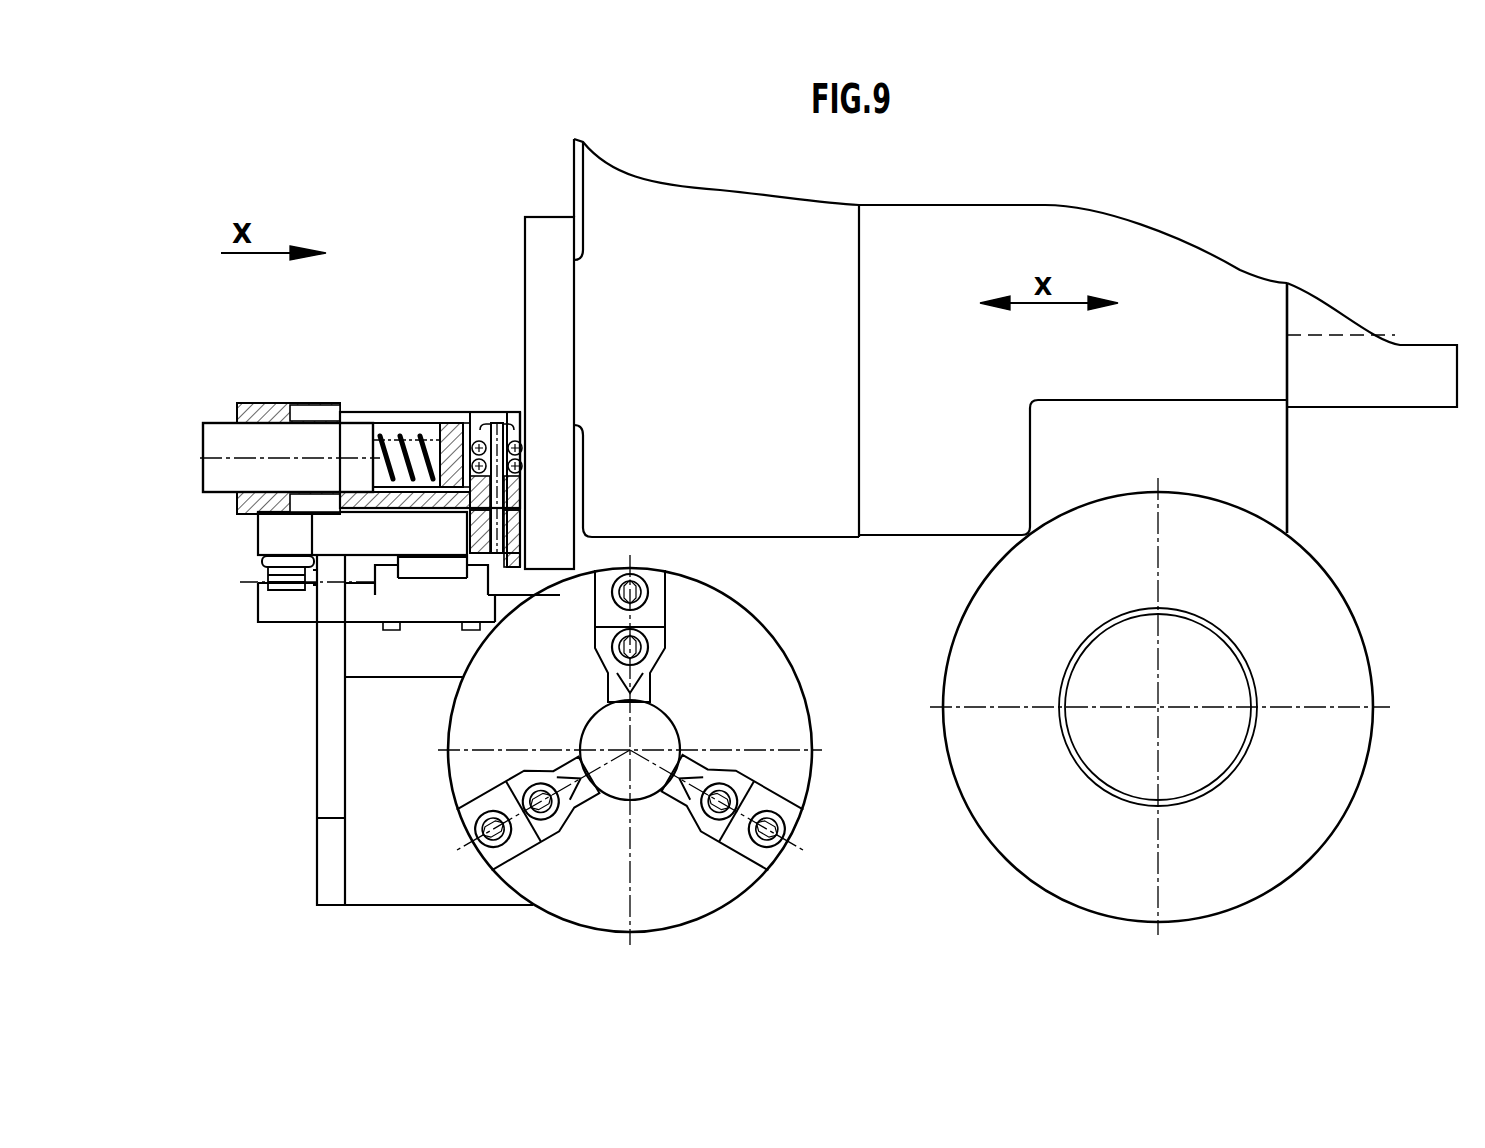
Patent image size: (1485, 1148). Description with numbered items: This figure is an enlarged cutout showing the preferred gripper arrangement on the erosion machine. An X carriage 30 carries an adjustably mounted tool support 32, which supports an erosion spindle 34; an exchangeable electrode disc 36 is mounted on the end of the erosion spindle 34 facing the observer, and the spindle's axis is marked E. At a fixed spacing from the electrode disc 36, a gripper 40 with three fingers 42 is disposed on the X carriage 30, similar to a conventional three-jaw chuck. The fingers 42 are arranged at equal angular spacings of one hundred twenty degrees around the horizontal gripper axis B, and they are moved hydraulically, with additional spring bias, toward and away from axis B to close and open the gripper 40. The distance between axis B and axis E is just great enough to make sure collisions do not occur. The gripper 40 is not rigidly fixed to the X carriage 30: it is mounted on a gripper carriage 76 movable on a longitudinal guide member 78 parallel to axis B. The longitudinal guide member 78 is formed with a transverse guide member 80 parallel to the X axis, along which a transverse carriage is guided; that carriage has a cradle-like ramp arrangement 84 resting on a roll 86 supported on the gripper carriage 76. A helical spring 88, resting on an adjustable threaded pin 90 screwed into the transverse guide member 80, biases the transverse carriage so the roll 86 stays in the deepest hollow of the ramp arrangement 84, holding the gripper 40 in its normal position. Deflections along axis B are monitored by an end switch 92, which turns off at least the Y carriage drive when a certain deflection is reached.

The X carriage 30 is at (815, 513).
The tool support 32 is at (1270, 500).
The erosion spindle 34 is at (1222, 668).
The electrode disc 36 is at (1272, 858).
The gripper 40 is at (770, 902).
The fingers 42 is at (612, 650).
The gripper carriage 76 is at (430, 598).
The longitudinal guide member 78 is at (415, 568).
The transverse guide member 80 is at (332, 547).
The cradle-like ramp arrangement 84 is at (448, 420).
The roll 86 is at (525, 448).
The spring 88 is at (411, 423).
The threaded pin 90 is at (223, 432).
The end switch 92 is at (266, 564).
The gripper axis B is at (630, 750).
The erosion spindle axis E is at (1160, 707).